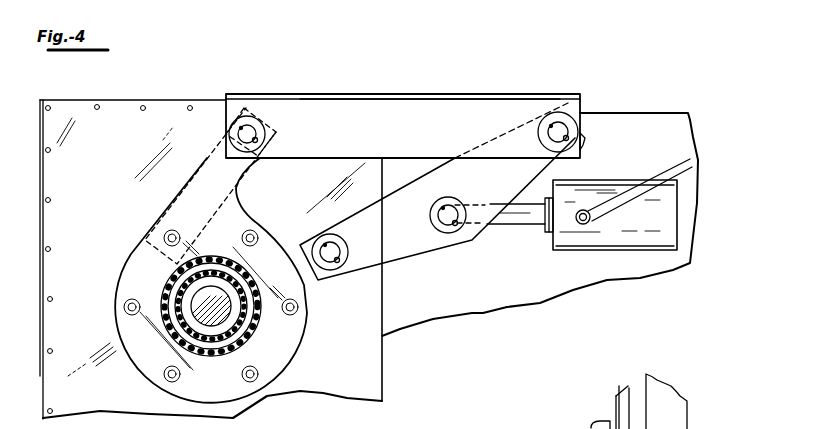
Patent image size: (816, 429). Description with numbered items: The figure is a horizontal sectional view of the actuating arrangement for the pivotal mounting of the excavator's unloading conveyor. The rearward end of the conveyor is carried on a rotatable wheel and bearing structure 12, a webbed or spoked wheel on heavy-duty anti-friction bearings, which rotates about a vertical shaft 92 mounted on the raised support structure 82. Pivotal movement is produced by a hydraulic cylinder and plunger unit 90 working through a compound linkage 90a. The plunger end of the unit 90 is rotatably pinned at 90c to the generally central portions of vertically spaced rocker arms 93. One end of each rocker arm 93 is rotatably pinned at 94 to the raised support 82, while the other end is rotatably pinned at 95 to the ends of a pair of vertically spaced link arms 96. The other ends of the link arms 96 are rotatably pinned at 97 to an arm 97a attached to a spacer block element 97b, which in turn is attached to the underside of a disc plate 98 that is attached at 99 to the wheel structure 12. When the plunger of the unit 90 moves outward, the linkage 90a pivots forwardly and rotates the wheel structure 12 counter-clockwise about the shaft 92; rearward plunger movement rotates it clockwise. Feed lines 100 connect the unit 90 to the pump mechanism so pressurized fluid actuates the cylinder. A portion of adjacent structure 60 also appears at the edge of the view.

The rotatable wheel and bearing structure 12 is at (112, 328).
The support structure 60 is at (601, 428).
The raised support structure 82 is at (383, 336).
The hydraulic cylinder and plunger unit 90 is at (607, 238).
The compound linkage 90a is at (492, 100).
The pin connection of plunger end 90c is at (456, 216).
The vertical shaft 92 is at (197, 324).
The rocker arms 93 is at (408, 256).
The pin connection of rocker arm to support 94 is at (343, 262).
The pin connection of rocker arm to link arms 95 is at (580, 128).
The link arms 96 is at (397, 103).
The pin connection of link arms to arm 97 is at (248, 130).
The arm 97a is at (228, 144).
The spacer block element 97b is at (186, 184).
The disc plate 98 is at (135, 250).
The attachment of disc plate to wheel structure 99 is at (258, 375).
The feed lines 100 is at (643, 195).